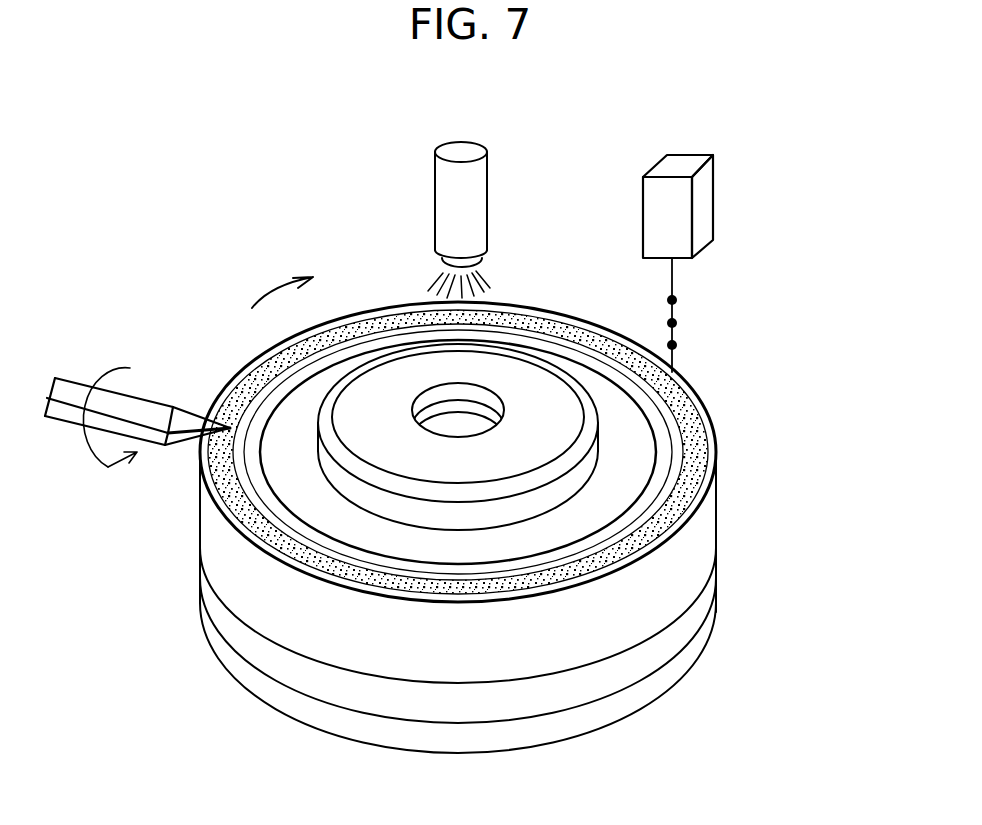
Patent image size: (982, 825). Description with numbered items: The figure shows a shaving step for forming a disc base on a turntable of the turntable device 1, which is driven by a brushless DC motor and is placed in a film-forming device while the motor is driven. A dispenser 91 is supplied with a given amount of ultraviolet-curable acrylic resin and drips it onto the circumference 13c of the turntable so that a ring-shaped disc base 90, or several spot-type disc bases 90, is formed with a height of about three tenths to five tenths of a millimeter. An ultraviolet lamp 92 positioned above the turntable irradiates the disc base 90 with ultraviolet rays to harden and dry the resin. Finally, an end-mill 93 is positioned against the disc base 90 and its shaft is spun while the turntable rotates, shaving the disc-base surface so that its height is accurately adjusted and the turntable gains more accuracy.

The turntable device 1 is at (534, 527).
The circumference 13c is at (717, 438).
The disc base 90 is at (705, 476).
The dispenser 91 is at (708, 213).
The ultraviolet lamp 92 is at (488, 205).
The end-mill 93 is at (130, 408).